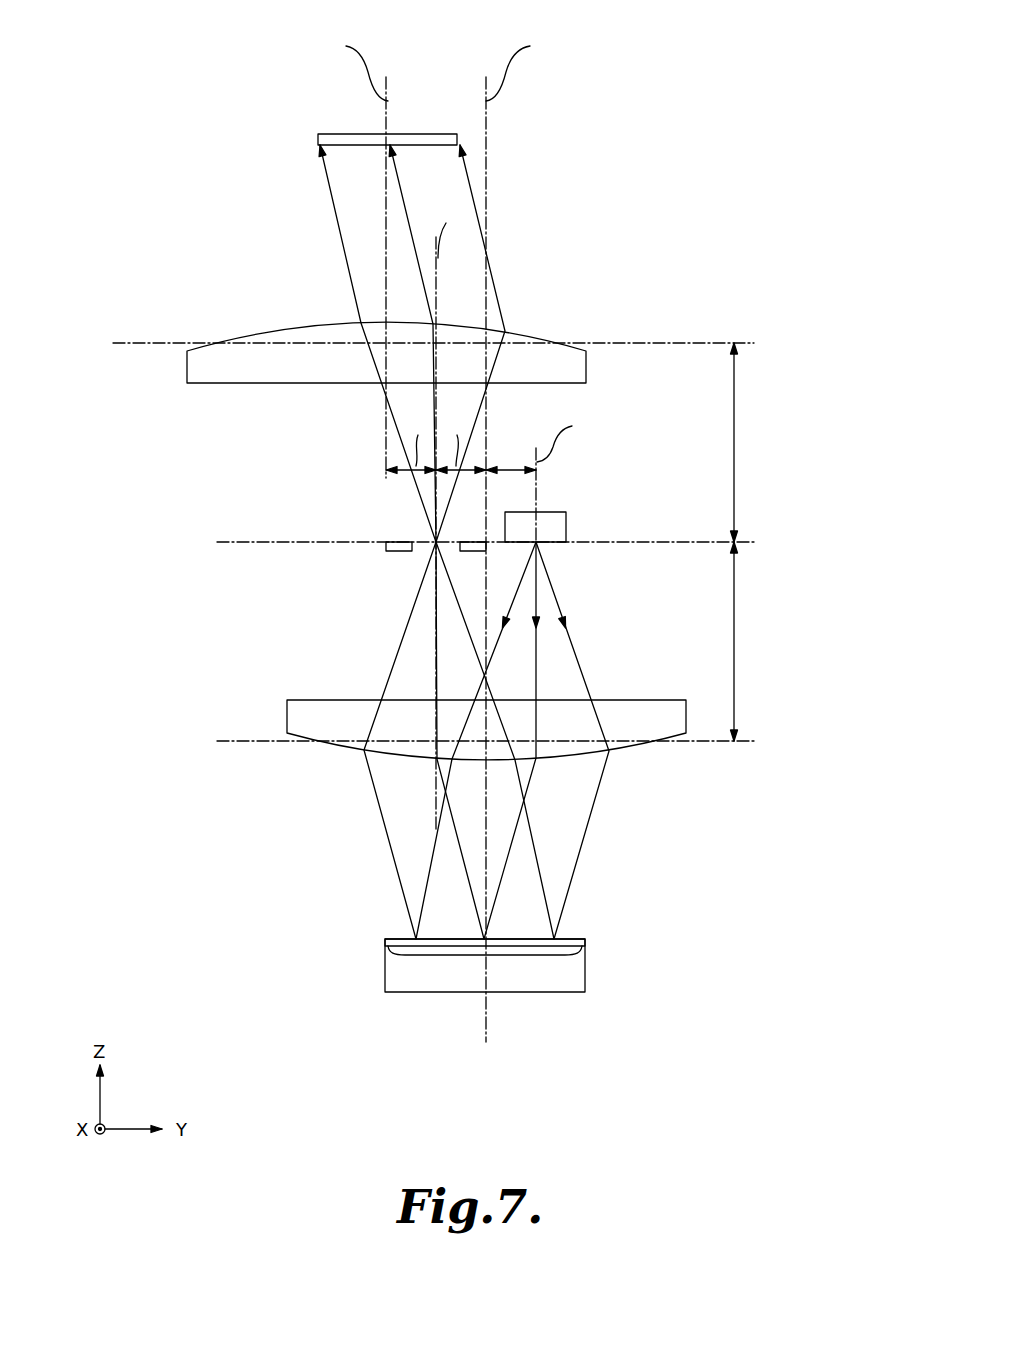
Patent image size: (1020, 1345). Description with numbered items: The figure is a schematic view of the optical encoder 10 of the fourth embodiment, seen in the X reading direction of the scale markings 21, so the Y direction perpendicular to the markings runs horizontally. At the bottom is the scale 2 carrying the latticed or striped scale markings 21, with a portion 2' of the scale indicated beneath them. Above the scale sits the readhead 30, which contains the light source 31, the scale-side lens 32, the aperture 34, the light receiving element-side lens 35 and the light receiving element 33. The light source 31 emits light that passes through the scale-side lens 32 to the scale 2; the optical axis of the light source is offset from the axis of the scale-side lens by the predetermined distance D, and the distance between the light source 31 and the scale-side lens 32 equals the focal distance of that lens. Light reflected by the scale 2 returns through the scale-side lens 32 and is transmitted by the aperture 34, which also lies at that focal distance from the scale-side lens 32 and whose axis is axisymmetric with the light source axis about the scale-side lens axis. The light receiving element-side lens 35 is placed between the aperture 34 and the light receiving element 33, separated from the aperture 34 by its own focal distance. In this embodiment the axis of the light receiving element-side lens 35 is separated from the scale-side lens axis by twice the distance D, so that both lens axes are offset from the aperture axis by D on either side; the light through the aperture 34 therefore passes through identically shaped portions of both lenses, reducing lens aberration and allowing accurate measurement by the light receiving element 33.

The optical encoder 10 is at (690, 172).
The readhead 30 is at (246, 426).
The light receiving element 33 is at (423, 134).
The light receiving element-side lens 35 is at (579, 374).
The aperture 34 is at (386, 546).
The light source 31 is at (570, 525).
The scale-side lens 32 is at (661, 706).
The scale 2 is at (517, 956).
The scale markings 21 is at (568, 938).
The illuminated region 2' is at (485, 991).